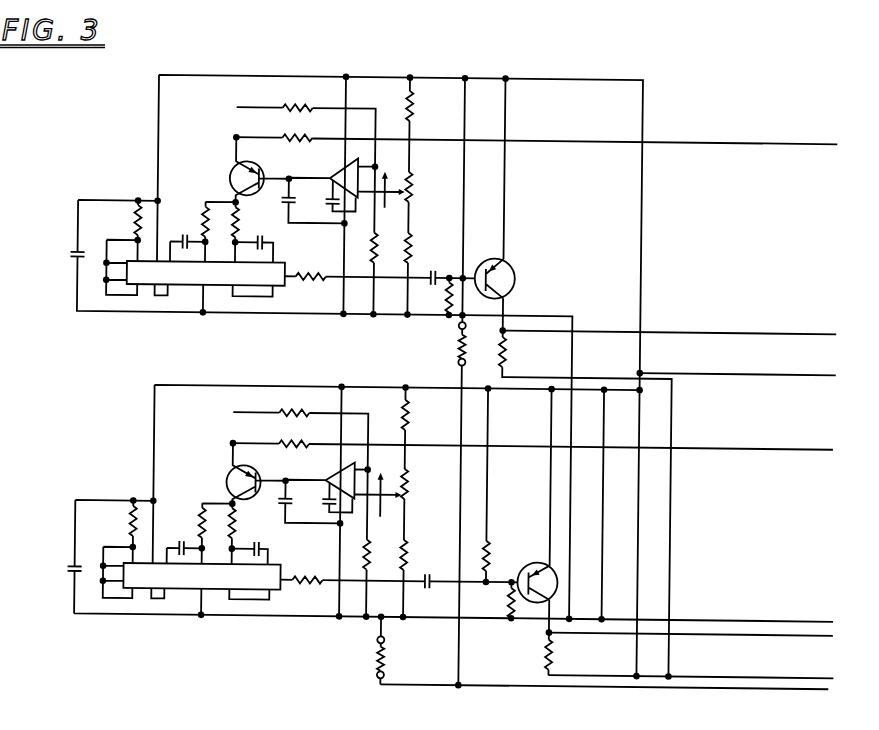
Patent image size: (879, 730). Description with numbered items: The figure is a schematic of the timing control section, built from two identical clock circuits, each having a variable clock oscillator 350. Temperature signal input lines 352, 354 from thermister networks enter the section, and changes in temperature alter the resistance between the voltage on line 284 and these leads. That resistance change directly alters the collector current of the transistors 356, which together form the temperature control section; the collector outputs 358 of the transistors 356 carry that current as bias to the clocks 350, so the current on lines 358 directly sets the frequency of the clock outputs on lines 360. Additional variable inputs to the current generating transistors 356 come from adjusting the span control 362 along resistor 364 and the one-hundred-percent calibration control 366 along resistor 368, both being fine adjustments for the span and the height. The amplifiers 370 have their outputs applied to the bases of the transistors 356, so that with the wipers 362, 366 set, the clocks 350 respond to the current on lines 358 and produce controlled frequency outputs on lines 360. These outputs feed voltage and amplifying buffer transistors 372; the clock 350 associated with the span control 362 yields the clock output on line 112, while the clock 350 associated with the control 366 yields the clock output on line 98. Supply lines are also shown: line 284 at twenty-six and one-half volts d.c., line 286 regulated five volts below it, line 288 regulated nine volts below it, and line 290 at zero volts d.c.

The variable clock oscillator 350 is at (204, 430).
The temperature signal input line 352 is at (711, 140).
The temperature signal input line 354 is at (696, 445).
The transistor 356 is at (258, 168).
The collector output 358 is at (232, 200).
The clock output line 360 is at (295, 276).
The span control 362 is at (366, 193).
The resistor 364 is at (409, 190).
The 100% calibration control 366 is at (378, 497).
The resistor 368 is at (409, 480).
The amplifier 370 is at (330, 186).
The voltage and amplifying buffer transistor 372 is at (510, 263).
The clock output line 112 is at (672, 330).
The output line 284 is at (763, 370).
The output line 286 is at (689, 617).
The clock output line 98 is at (796, 630).
The supply line 288 is at (698, 674).
The output line 290 is at (594, 685).